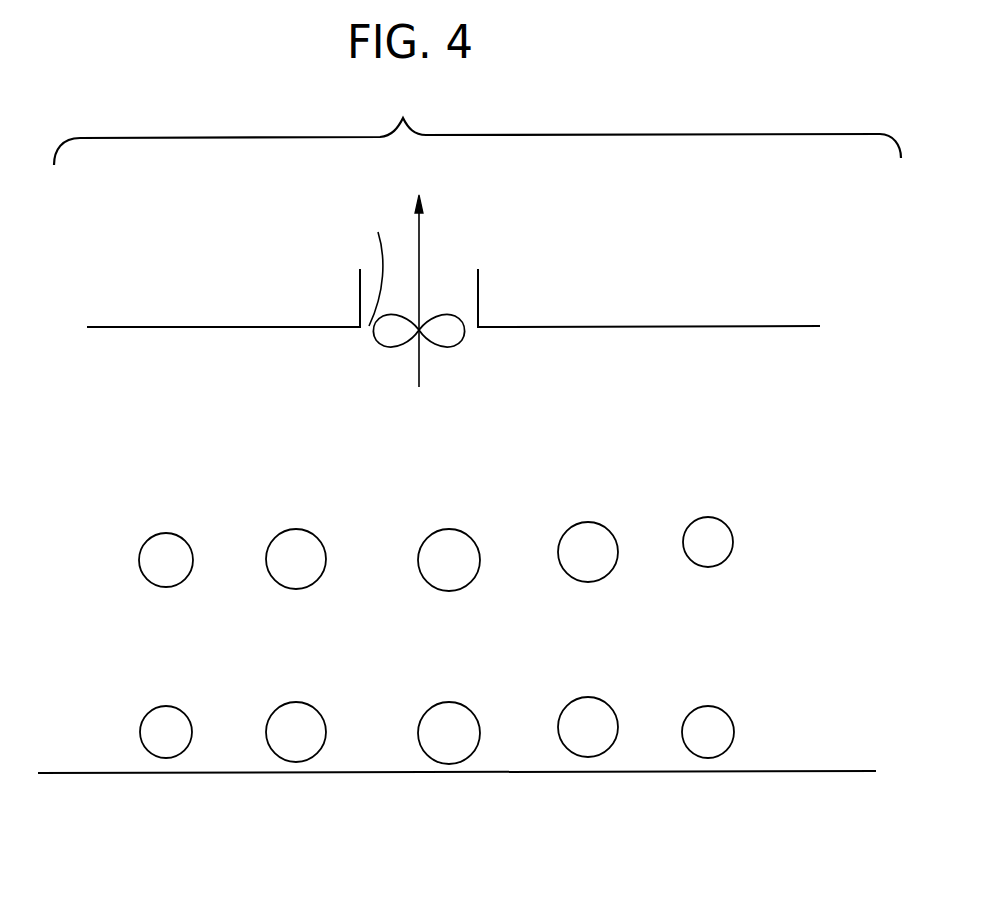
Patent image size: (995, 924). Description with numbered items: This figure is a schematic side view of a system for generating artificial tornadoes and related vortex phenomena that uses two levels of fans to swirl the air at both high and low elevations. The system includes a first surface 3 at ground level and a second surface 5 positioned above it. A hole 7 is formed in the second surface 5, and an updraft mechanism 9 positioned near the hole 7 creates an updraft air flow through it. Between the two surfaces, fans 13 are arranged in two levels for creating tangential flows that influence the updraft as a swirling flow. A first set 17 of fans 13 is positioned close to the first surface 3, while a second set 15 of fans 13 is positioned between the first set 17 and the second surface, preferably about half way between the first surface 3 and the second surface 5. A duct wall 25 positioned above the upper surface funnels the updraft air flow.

The first surface 3 is at (223, 773).
The second surface 5 is at (123, 328).
The hole 7 is at (374, 266).
The updraft mechanism 9 is at (448, 345).
The fans 13 is at (322, 547).
The second set of fans 15 is at (136, 548).
The first set of fans 17 is at (136, 720).
The duct wall 25 is at (610, 325).